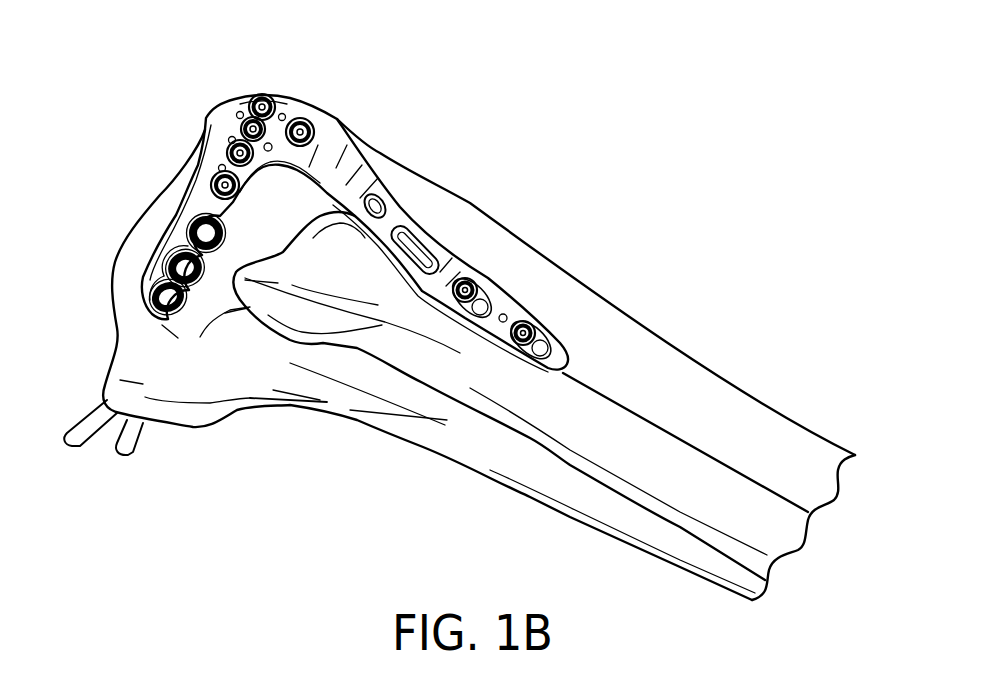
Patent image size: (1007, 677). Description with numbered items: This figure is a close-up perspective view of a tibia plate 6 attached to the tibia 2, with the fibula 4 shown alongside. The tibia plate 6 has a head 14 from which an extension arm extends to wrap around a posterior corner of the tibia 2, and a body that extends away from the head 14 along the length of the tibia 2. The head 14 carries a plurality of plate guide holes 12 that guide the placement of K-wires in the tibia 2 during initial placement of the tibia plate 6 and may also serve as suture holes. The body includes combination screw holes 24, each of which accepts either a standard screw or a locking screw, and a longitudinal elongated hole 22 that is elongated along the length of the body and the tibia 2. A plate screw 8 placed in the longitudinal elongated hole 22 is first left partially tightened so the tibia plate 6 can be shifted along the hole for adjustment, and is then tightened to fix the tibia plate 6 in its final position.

The tibia 2 is at (647, 373).
The fibula 4 is at (530, 400).
The tibia plate 6 is at (373, 152).
The plate screw 8 is at (237, 114).
The plate guide hole 12 is at (281, 113).
The head 14 is at (289, 143).
The longitudinal elongated hole 22 is at (413, 253).
The combination screw hole 24 is at (484, 302).